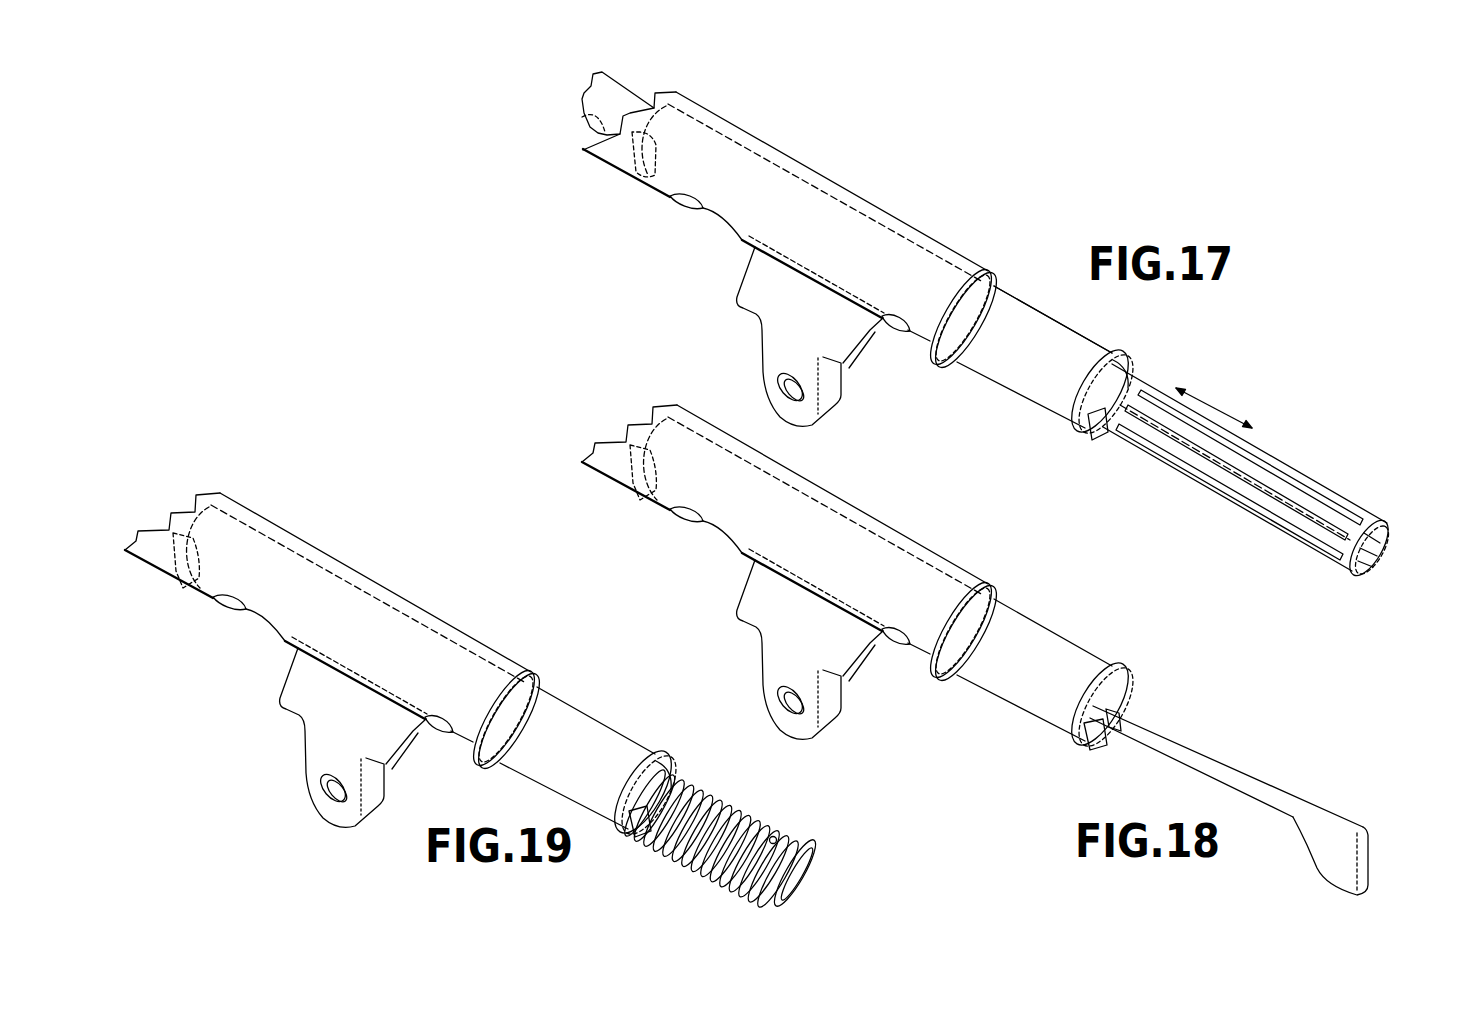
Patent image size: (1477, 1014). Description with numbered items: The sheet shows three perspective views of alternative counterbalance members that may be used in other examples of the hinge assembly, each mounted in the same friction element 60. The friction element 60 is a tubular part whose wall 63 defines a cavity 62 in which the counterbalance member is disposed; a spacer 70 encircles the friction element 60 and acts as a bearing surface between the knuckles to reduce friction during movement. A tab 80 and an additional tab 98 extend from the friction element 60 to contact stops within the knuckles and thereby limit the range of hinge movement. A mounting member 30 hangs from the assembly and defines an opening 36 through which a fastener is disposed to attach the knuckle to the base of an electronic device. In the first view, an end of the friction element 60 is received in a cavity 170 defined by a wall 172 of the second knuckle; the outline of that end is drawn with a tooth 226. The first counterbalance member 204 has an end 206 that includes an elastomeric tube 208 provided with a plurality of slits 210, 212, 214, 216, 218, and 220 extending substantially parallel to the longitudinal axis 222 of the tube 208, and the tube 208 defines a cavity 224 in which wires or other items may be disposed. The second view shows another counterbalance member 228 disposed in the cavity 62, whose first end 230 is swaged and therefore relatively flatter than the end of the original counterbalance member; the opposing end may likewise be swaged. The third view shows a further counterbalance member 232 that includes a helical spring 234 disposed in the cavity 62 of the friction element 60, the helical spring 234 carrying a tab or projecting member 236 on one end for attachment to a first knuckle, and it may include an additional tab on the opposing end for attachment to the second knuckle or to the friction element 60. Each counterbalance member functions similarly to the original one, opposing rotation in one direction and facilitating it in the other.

In FIG. 17, the mounting member 30 is at (766, 352).
In FIG. 18, the mounting member 30 is at (795, 649).
In FIG. 19, the mounting member 30 is at (338, 737).
In FIG. 17, the opening 36 is at (785, 392).
In FIG. 18, the opening 36 is at (764, 707).
In FIG. 19, the opening 36 is at (307, 795).
In FIG. 17, the friction element 60 is at (842, 187).
In FIG. 18, the friction element 60 is at (847, 573).
In FIG. 19, the friction element 60 is at (390, 661).
In FIG. 17, the third cavity 62 is at (1124, 366).
In FIG. 18, the third cavity 62 is at (1125, 746).
In FIG. 19, the third cavity 62 is at (675, 749).
In FIG. 17, the wall 63 is at (1096, 377).
In FIG. 18, the wall 63 is at (1102, 681).
In FIG. 19, the wall 63 is at (645, 769).
In FIG. 17, the spacer 70 is at (1001, 282).
In FIG. 18, the spacer 70 is at (966, 604).
In FIG. 19, the spacer 70 is at (509, 692).
In FIG. 17, the tab 80 is at (1089, 430).
In FIG. 18, the tab 80 is at (1092, 757).
In FIG. 19, the tab 80 is at (638, 846).
In FIG. 17, the tab 98 is at (634, 168).
In FIG. 18, the tab 98 is at (641, 495).
In FIG. 19, the tab 98 is at (184, 583).
In FIG. 17, the cavity 170 is at (582, 116).
In FIG. 17, the wall 172 is at (672, 91).
In FIG. 17, the counterbalance member 204 is at (1282, 453).
In FIG. 17, the end 206 is at (1097, 380).
In FIG. 17, the elastomeric tube 208 is at (1376, 516).
In FIG. 17, the slit 210 is at (1297, 540).
In FIG. 17, the slit 212 is at (1227, 472).
In FIG. 17, the slit 214 is at (1328, 497).
In FIG. 17, the slit 216 is at (1393, 533).
In FIG. 17, the slit 218 is at (1390, 557).
In FIG. 17, the slit 220 is at (1372, 580).
In FIG. 17, the longitudinal axis 222 is at (1219, 405).
In FIG. 17, the cavity 224 is at (1388, 572).
In FIG. 17, the tooth 226 is at (628, 82).
In FIG. 18, the counterbalance member 228 is at (1249, 749).
In FIG. 18, the first end 230 is at (1322, 853).
In FIG. 19, the counterbalance member 232 is at (775, 821).
In FIG. 19, the helical spring 234 is at (736, 810).
In FIG. 19, the tab 236 is at (778, 842).